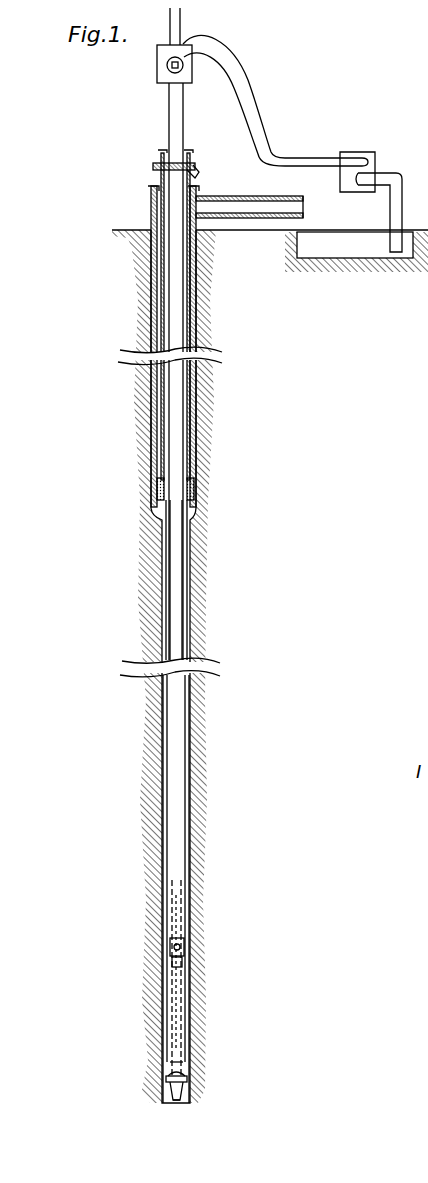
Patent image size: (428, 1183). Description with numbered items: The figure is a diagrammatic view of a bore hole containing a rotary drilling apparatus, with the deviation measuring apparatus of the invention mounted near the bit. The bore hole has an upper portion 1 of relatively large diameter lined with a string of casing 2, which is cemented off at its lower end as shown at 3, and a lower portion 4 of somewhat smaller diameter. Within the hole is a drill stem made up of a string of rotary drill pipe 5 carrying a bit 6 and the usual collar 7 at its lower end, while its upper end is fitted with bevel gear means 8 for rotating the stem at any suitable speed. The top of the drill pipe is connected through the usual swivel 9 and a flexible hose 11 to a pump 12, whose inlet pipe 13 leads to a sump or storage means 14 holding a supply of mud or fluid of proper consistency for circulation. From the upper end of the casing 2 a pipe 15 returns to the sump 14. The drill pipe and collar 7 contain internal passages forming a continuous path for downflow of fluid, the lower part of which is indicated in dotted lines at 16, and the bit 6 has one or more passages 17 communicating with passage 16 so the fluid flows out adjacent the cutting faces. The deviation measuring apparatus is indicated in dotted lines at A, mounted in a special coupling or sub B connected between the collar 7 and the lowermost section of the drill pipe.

The upper portion of bore hole 1 is at (200, 331).
The casing 2 is at (192, 419).
The cemented lower end of casing 3 is at (196, 476).
The lower portion of bore hole 4 is at (189, 721).
The rotary drill pipe 5 is at (186, 580).
The bit 6 is at (190, 1088).
The collar 7 is at (178, 1022).
The bevel gear means 8 is at (196, 172).
The swivel 9 is at (157, 76).
The flexible hose 11 is at (252, 100).
The pump 12 is at (376, 160).
The inlet pipe 13 is at (403, 199).
The sump or storage means 14 is at (366, 256).
The pipe 15 is at (232, 199).
The internal passage 16 is at (192, 901).
The bit passages 17 is at (164, 1090).
The deviation measuring apparatus A is at (186, 947).
The coupling section (sub) B is at (184, 962).